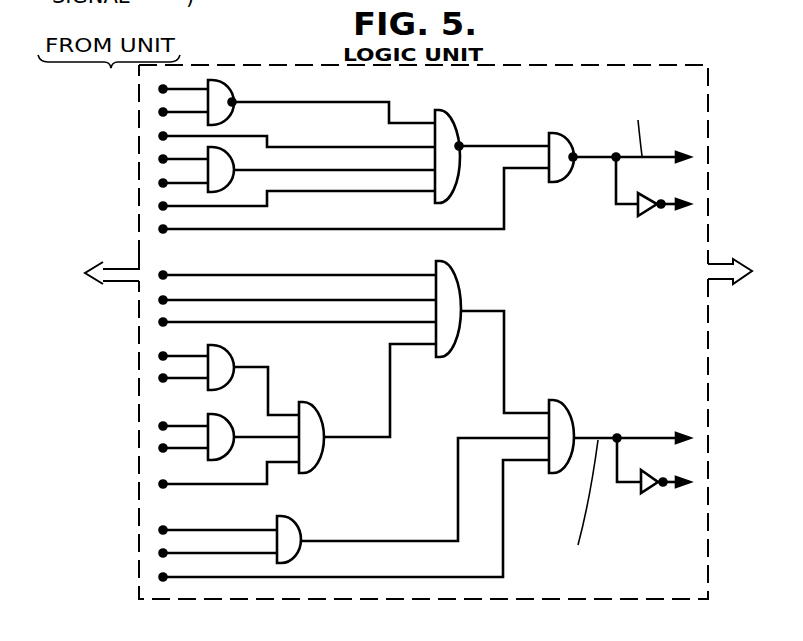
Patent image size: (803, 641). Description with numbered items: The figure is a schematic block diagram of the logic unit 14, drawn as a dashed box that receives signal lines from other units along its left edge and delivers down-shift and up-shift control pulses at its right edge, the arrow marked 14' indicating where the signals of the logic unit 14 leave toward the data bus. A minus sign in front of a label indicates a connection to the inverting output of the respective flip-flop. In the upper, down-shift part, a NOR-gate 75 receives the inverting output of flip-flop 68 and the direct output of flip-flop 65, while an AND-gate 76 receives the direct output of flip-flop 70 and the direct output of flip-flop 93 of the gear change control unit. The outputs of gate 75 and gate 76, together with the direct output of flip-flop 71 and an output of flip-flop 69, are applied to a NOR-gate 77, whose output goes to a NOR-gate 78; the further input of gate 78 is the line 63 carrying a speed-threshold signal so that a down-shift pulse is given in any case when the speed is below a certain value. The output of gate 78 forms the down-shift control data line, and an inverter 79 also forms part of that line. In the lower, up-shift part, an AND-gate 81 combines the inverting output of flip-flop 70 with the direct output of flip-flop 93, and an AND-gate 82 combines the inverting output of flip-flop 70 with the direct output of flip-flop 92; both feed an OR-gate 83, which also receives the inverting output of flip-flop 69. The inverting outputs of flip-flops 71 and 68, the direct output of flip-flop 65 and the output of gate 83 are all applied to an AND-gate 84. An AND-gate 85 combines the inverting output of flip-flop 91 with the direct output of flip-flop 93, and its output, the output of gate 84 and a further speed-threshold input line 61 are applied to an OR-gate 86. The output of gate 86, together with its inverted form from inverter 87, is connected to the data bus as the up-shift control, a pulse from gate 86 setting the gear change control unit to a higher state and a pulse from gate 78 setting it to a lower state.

The logic unit 14 is at (429, 332).
The logic unit output 14' is at (741, 252).
The input signal line 61 is at (163, 577).
The line 63 is at (163, 229).
The flip-flop 65 is at (163, 112).
The flip-flop 68 is at (163, 89).
The flip-flop 69 is at (163, 206).
The flip-flop 70 is at (163, 159).
The flip-flop 71 is at (163, 136).
The NOR-gate 75 is at (231, 98).
The AND-gate 76 is at (222, 166).
The NOR-gate 77 is at (452, 133).
The NOR-gate 78 is at (565, 152).
The inverter 79 is at (648, 200).
The AND-gate 81 is at (222, 364).
The AND-gate 82 is at (218, 428).
The OR-gate 83 is at (318, 423).
The AND-gate 84 is at (450, 284).
The AND-gate 85 is at (292, 533).
The OR-gate 86 is at (565, 423).
The inverter 87 is at (648, 486).
The flip-flop 91 is at (163, 530).
The flip-flop 92 is at (163, 448).
The flip-flop 93 is at (163, 183).